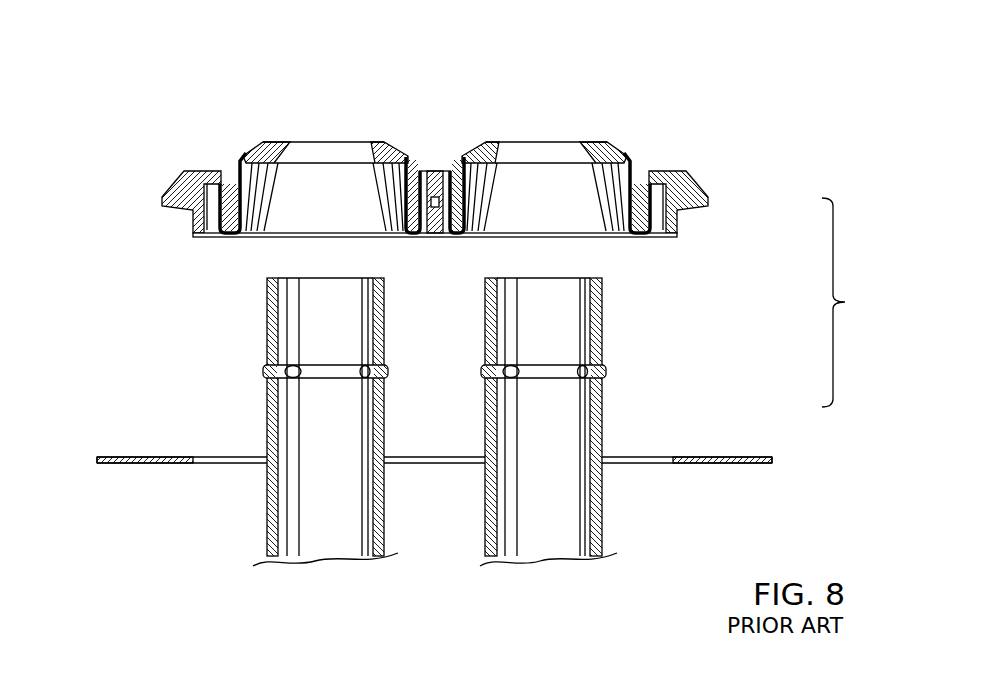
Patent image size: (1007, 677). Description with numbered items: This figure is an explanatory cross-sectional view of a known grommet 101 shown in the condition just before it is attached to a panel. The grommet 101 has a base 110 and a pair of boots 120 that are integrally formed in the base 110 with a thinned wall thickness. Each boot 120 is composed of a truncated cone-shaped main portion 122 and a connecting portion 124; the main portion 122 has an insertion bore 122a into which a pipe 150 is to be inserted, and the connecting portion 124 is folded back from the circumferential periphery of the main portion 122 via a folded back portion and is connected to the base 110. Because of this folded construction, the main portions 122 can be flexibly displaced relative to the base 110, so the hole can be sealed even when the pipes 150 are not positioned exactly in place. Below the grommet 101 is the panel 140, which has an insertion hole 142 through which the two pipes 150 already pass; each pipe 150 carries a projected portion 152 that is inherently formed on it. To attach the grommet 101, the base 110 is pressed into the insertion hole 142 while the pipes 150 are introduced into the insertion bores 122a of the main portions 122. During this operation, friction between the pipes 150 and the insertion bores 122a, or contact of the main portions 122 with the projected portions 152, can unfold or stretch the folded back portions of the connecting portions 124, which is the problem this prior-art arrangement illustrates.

The grommet 101 is at (760, 80).
The base 110 is at (676, 164).
The boot 120 is at (263, 80).
The main portion 122 is at (242, 198).
The insertion bore 122a is at (316, 141).
The connecting portion 124 is at (230, 205).
The panel 140 is at (745, 455).
The insertion hole 142 is at (672, 465).
The pipe 150 is at (267, 405).
The projected portion 152 is at (481, 372).